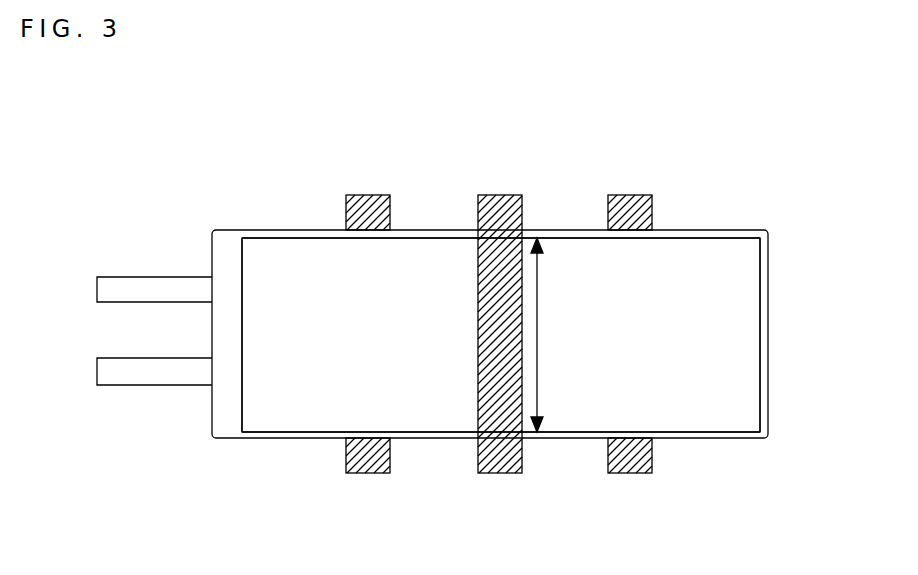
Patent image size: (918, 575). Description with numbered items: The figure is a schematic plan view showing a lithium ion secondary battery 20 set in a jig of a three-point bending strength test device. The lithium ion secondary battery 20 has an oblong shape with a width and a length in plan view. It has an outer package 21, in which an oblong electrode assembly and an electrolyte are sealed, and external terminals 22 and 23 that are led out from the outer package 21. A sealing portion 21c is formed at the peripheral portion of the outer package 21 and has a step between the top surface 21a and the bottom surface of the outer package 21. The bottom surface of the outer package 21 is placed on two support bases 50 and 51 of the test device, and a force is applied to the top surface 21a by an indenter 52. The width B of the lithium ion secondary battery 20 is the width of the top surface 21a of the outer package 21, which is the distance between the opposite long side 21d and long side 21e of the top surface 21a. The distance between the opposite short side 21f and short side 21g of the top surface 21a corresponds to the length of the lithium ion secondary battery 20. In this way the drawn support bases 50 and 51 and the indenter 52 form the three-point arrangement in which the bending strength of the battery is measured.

The lithium ion secondary battery 20 is at (785, 339).
The outer package 21 is at (299, 405).
The top surface 21a is at (282, 230).
The sealing portion 21c is at (715, 230).
The long side 21d is at (442, 230).
The long side 21e is at (444, 432).
The short side 21f is at (240, 290).
The short side 21g is at (760, 379).
The external terminal 22 is at (160, 372).
The external terminal 23 is at (160, 292).
The support base 50 is at (372, 195).
The support base 51 is at (632, 195).
The indenter 52 is at (498, 195).